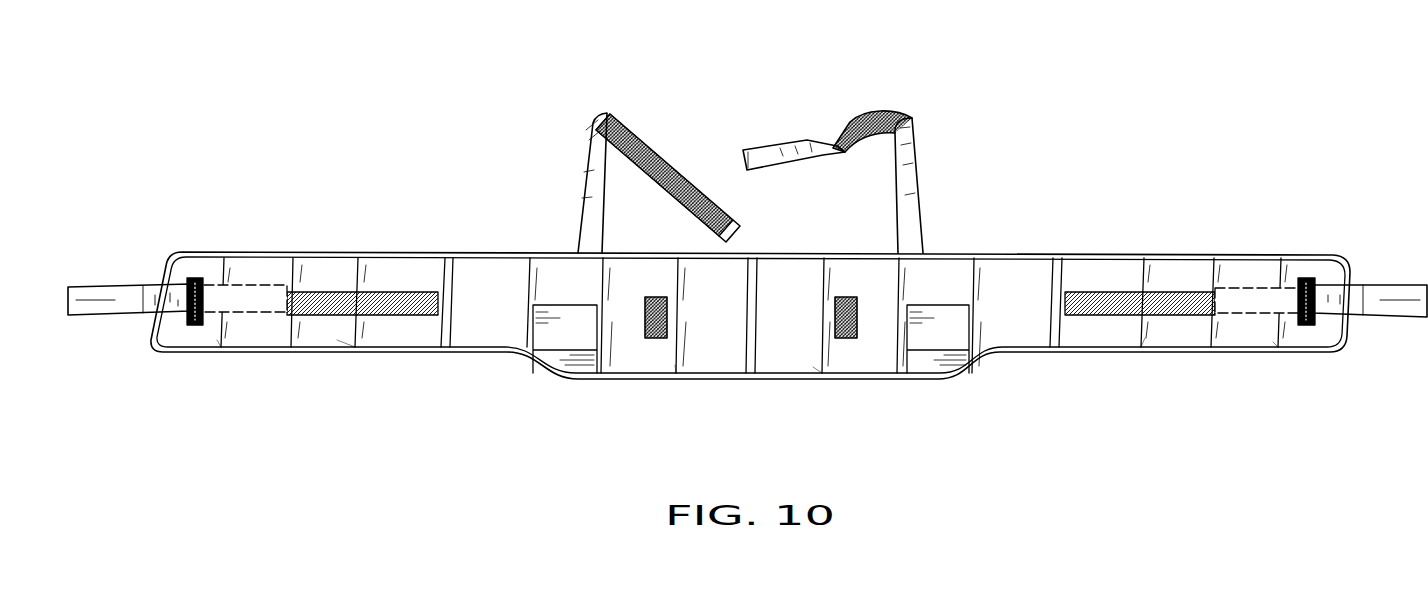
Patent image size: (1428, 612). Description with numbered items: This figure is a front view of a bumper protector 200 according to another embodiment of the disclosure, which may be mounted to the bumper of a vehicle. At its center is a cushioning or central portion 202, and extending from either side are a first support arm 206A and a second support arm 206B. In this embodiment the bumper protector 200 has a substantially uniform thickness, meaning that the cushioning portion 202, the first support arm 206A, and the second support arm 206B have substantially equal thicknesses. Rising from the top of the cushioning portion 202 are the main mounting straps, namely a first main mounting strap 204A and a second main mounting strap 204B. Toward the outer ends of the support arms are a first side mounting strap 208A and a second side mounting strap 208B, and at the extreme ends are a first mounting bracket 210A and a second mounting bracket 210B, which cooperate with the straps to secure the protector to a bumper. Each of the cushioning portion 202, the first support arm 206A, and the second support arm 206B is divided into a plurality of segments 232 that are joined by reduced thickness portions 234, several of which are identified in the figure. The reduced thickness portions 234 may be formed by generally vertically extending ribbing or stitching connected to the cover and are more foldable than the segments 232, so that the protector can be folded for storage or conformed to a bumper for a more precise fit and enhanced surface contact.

The bumper protector 200 is at (432, 113).
The cushioning portion 202 is at (770, 253).
The first main mounting strap 204A is at (587, 175).
The second main mounting strap 204B is at (918, 172).
The first support arm 206A is at (333, 252).
The second support arm 206B is at (1117, 253).
The first side mounting strap 208A is at (216, 287).
The second side mounting strap 208B is at (1285, 283).
The first mounting bracket 210A is at (97, 282).
The second mounting bracket 210B is at (1377, 283).
The segments 232 is at (315, 263).
The reduced thickness portions 234 is at (217, 338).